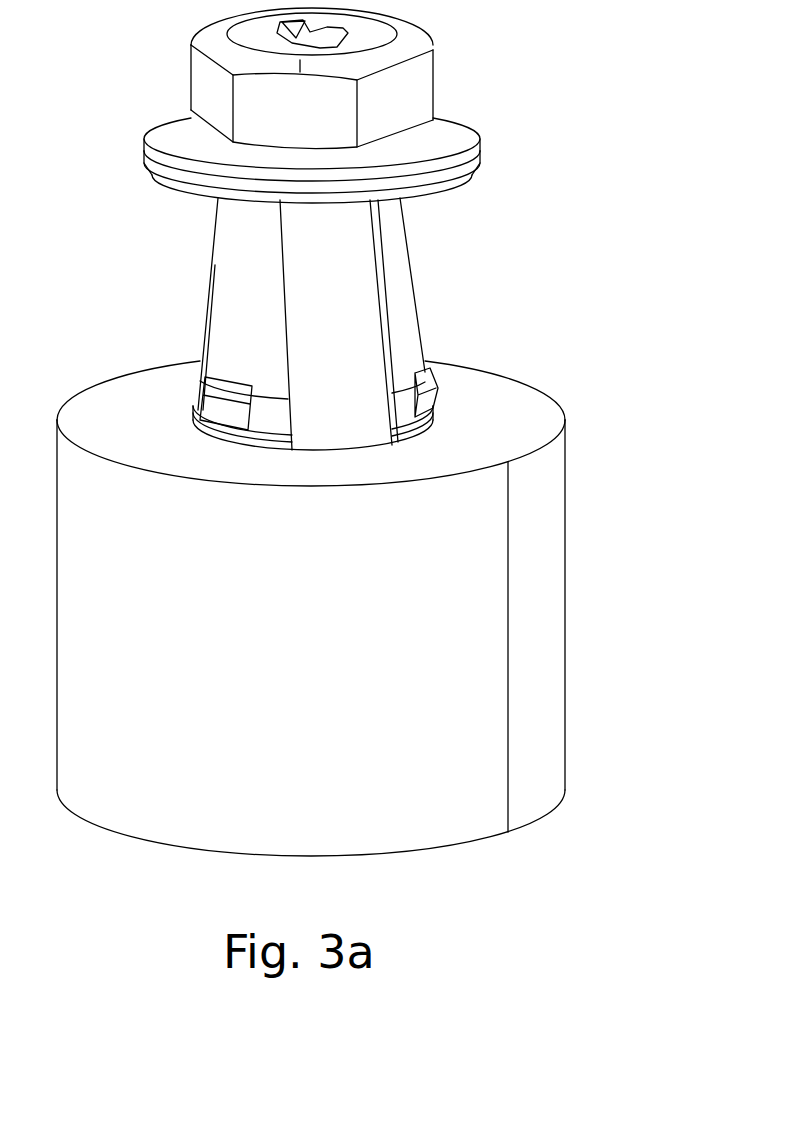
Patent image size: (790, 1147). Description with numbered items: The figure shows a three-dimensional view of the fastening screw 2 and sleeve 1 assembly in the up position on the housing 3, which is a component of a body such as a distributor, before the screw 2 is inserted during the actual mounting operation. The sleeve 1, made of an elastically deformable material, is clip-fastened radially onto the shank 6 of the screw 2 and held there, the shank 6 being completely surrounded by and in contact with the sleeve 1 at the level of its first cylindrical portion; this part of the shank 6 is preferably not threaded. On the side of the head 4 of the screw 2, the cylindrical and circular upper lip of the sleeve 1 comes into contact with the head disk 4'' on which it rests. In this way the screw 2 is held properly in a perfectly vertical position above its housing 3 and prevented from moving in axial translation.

The sleeve 1 is at (421, 320).
The fastening screw 2 is at (211, 88).
The housing 3 is at (510, 580).
The head of the screw 4 is at (367, 139).
The head disk 4'' is at (268, 139).
The shank of the screw 6 is at (328, 248).